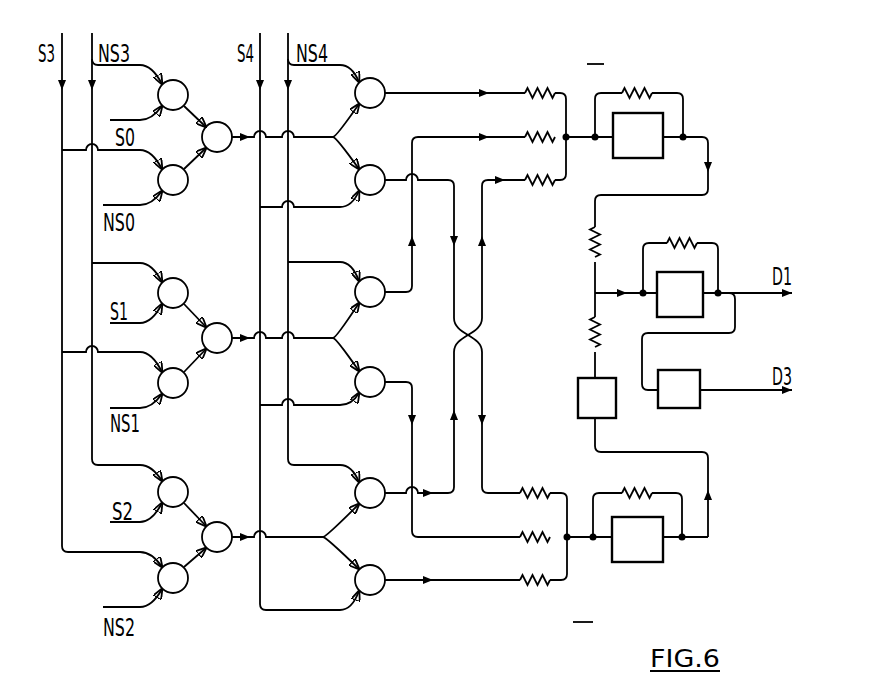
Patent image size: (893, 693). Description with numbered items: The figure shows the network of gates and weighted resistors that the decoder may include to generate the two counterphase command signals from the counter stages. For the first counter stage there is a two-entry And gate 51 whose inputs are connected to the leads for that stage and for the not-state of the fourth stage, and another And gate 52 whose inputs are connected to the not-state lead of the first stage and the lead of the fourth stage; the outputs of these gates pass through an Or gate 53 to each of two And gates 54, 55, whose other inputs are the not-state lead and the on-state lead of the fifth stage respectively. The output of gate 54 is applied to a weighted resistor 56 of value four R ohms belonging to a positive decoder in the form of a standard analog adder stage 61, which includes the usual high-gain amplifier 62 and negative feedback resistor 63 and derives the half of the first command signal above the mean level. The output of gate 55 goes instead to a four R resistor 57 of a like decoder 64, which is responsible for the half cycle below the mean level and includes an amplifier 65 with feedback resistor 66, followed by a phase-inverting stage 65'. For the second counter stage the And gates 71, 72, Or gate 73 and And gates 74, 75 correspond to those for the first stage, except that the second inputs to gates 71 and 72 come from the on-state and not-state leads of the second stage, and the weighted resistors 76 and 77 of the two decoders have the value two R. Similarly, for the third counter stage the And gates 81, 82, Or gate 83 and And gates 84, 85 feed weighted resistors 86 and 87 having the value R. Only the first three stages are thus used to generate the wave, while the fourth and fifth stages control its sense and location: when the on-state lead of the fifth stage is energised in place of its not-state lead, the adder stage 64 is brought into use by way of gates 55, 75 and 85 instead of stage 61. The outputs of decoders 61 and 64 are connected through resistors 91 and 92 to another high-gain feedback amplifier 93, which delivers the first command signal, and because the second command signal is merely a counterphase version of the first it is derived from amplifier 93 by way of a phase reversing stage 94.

The And gate 51 is at (182, 83).
The And gate 52 is at (187, 187).
The Or gate 53 is at (227, 125).
The And gate 71 is at (184, 281).
The And gate 72 is at (188, 387).
The Or gate 73 is at (226, 326).
The And gate 81 is at (184, 481).
The And gate 82 is at (184, 589).
The Or gate 83 is at (227, 525).
The And gate 54 is at (381, 82).
The And gate 55 is at (379, 168).
The And gate 74 is at (381, 280).
The And gate 75 is at (382, 370).
The And gate 84 is at (380, 481).
The And gate 85 is at (381, 568).
The weighted resistor 56 is at (527, 92).
The weighted resistor 76 is at (522, 137).
The weighted resistor 86 is at (522, 181).
The weighted resistor 57 is at (517, 492).
The weighted resistor 77 is at (517, 536).
The weighted resistor 87 is at (517, 580).
The analog adder stage 61 is at (584, 109).
The high-gain amplifier 62 is at (645, 159).
The negative feedback resistor 63 is at (652, 86).
The decoder 64 is at (581, 558).
The amplifier 65 is at (646, 556).
The phase-inverting stage 65' is at (571, 395).
The feedback resistor 66 is at (650, 488).
The resistor 91 is at (590, 246).
The resistor 92 is at (591, 331).
The high-gain feedback amplifier 93 is at (704, 301).
The phase reversing stage 94 is at (700, 406).